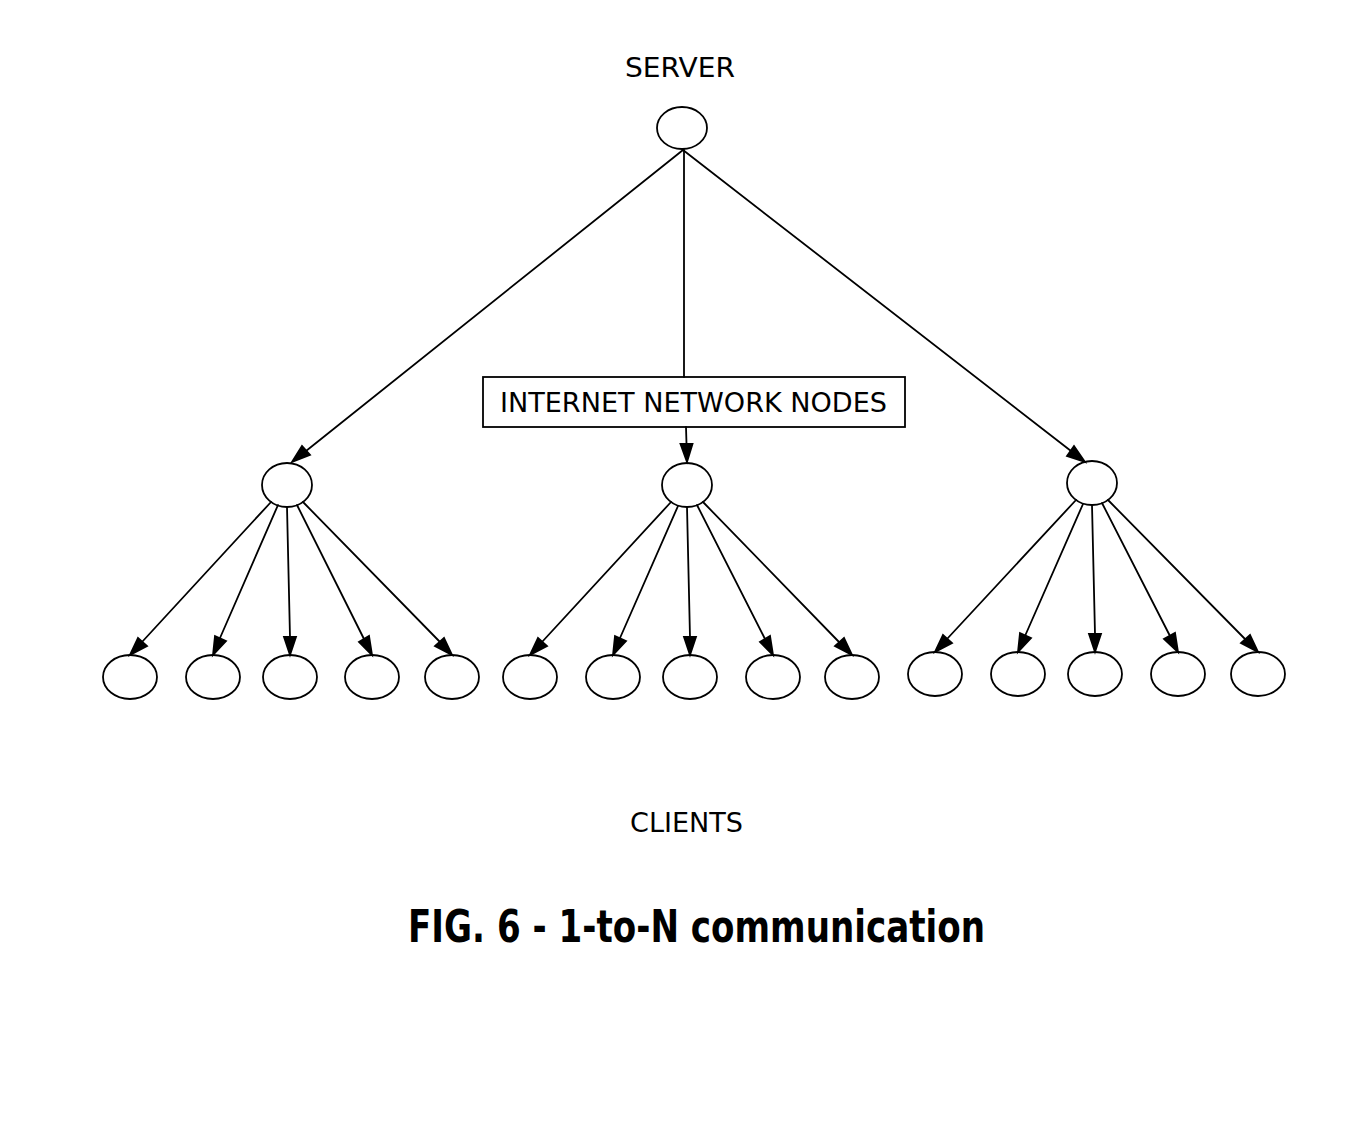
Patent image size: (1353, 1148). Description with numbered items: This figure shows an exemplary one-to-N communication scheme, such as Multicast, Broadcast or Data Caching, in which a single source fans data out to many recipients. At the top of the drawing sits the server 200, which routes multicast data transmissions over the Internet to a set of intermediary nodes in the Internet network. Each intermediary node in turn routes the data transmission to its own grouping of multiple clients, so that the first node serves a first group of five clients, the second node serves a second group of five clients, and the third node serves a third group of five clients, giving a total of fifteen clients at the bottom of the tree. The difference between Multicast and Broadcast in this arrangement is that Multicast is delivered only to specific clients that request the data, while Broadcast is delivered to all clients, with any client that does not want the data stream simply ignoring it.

The server 200 is at (697, 126).